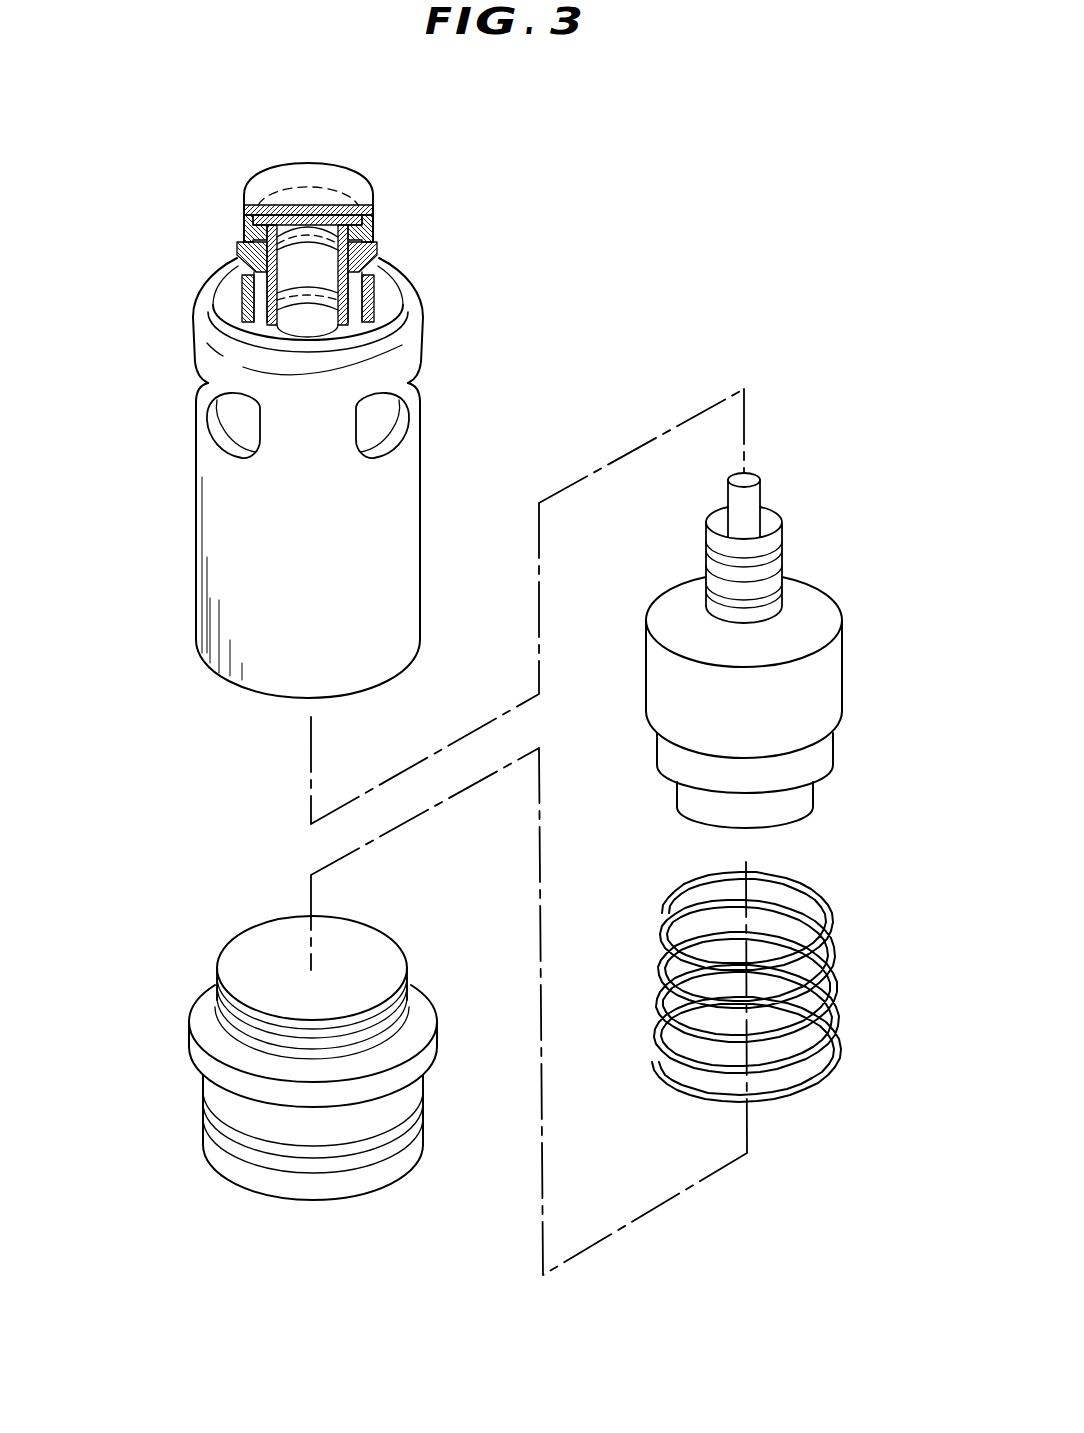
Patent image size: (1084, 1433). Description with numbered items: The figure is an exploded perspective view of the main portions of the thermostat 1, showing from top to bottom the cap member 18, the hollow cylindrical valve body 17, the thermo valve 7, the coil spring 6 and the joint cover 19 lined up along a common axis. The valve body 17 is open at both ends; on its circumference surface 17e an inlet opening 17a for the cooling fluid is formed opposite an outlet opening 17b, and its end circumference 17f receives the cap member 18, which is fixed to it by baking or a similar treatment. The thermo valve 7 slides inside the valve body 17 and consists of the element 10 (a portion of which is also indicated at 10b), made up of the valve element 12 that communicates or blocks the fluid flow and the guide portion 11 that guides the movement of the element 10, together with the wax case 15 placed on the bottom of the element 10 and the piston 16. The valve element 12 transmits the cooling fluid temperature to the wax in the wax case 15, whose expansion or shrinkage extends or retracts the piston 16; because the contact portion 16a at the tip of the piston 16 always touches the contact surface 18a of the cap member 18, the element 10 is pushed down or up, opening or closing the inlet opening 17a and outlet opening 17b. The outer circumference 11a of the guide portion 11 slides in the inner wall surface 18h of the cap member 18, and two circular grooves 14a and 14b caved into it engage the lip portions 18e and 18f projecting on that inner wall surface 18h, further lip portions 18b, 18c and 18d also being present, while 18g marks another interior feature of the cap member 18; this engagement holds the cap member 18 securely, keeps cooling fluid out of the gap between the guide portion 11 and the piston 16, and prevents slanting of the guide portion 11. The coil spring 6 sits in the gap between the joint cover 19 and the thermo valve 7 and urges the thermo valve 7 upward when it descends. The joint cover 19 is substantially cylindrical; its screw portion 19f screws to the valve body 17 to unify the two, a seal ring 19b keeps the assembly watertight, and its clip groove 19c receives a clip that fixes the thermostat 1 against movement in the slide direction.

The thermostat 1 is at (560, 267).
The coil spring 6 is at (833, 990).
The thermo valve 7 is at (803, 834).
The element 10 is at (830, 753).
The valve body portion 10b is at (807, 665).
The guide portion 11 is at (772, 547).
The outer circumference 11a is at (707, 538).
The valve element 12 is at (830, 680).
The circular groove 14a is at (772, 567).
The circular groove 14b is at (772, 608).
The wax case 15 is at (793, 802).
The piston 16 is at (745, 510).
The contact portion 16a is at (745, 480).
The valve body 17 is at (197, 577).
The inlet opening 17a is at (210, 413).
The outlet opening 17b is at (410, 413).
The circumference surface 17e is at (400, 583).
The end circumference 17f is at (413, 280).
The cap member 18 is at (306, 166).
The contact surface 18a is at (373, 222).
The lip portion 18b is at (243, 223).
The lip portion 18c is at (247, 293).
The lip portion 18d is at (212, 300).
The lip portion 18e is at (377, 244).
The lip portion 18f is at (330, 297).
The upper bore opening 18g is at (306, 227).
The inner wall surface 18h is at (296, 258).
The joint cover 19 is at (228, 1214).
The seal ring 19b is at (205, 1043).
The clip groove 19c is at (207, 1128).
The screw portion 19f is at (217, 990).